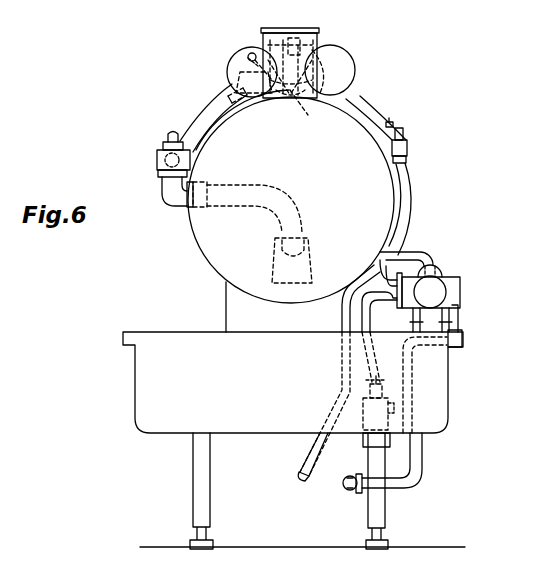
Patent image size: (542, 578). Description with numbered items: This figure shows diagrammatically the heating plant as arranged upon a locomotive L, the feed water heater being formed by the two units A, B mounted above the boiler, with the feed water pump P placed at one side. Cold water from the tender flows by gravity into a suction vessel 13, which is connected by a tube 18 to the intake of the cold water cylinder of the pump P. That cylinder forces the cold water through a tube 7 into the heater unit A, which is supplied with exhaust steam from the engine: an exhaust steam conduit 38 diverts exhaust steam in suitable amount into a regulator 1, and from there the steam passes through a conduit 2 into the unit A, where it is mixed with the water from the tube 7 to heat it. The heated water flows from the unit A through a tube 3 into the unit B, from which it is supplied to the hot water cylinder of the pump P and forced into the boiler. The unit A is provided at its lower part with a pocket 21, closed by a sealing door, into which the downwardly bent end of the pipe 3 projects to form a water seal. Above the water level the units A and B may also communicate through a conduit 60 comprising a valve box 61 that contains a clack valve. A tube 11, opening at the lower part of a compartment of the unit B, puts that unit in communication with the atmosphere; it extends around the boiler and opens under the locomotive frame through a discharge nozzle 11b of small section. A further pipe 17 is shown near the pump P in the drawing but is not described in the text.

The locomotive L is at (372, 202).
The conduit 2 is at (206, 119).
The heater unit A is at (240, 72).
The heater unit B is at (338, 70).
The conduit 60 is at (318, 40).
The valve box 61 is at (296, 40).
The tube 7 is at (257, 45).
The pocket 21 is at (249, 108).
The tube 3 is at (414, 132).
The regulator 1 is at (157, 157).
The exhaust steam conduit 38 is at (266, 222).
The tube 11 is at (342, 310).
The discharge nozzle 11b is at (307, 488).
The pipe 17 is at (362, 328).
The feed water pump P is at (421, 293).
The tube 18 is at (405, 370).
The suction vessel 13 is at (368, 425).